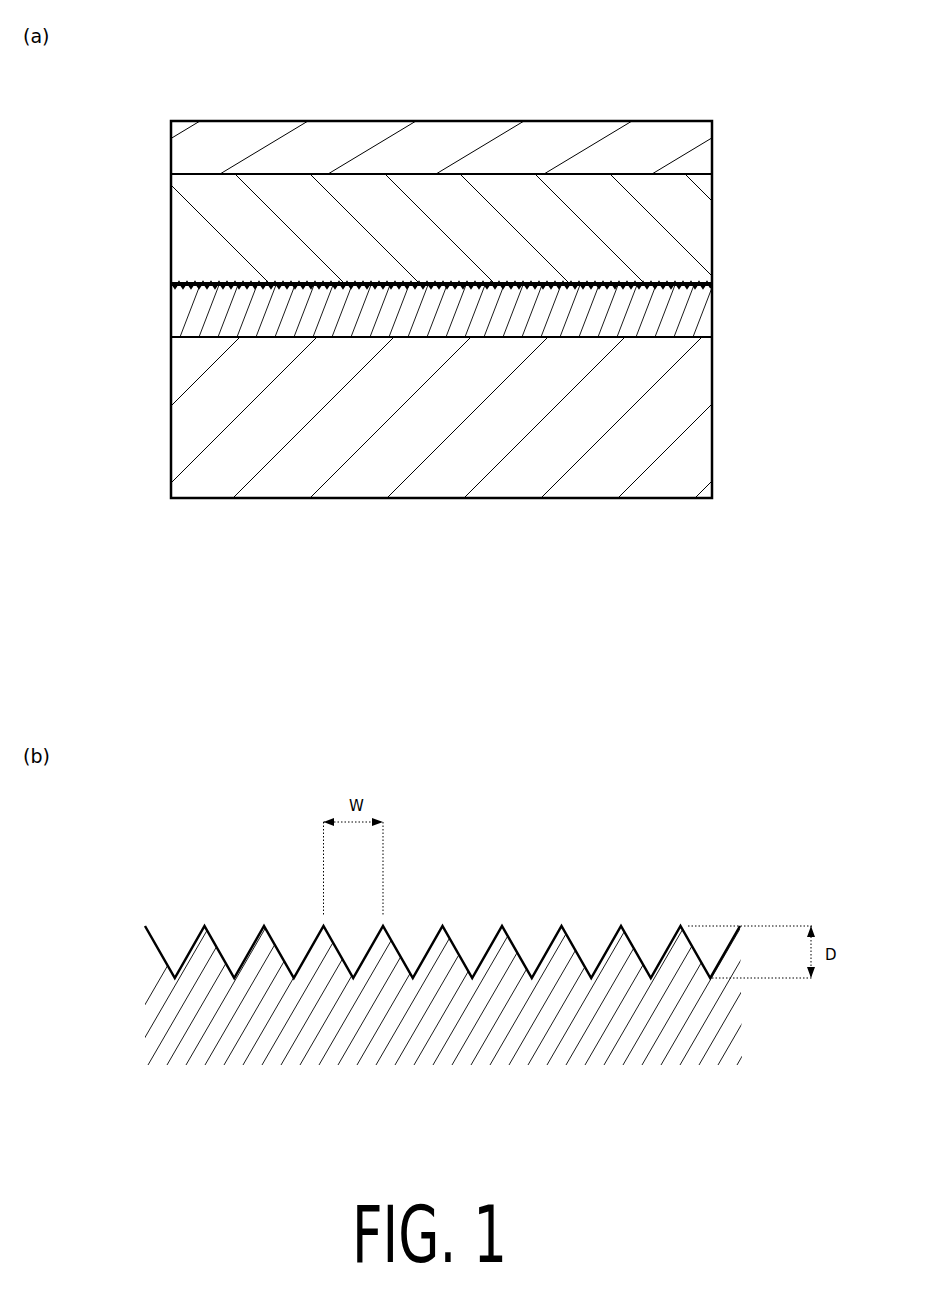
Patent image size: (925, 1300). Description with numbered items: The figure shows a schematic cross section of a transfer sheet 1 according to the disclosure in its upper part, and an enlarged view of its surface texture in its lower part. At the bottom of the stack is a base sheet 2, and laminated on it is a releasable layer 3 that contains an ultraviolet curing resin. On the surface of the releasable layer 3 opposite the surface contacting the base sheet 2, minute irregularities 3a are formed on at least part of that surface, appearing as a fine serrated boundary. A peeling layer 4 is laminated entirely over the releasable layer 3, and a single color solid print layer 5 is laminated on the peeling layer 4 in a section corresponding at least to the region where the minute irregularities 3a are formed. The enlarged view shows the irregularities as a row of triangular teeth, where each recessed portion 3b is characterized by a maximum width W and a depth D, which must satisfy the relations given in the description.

The transfer sheet 1 is at (469, 82).
The base sheet 2 is at (713, 418).
The releasable layer 3 is at (713, 305).
The minute irregularities 3a is at (683, 278).
The recessed portion 3b is at (177, 927).
The peeling layer 4 is at (713, 226).
The single color solid print layer 5 is at (713, 145).